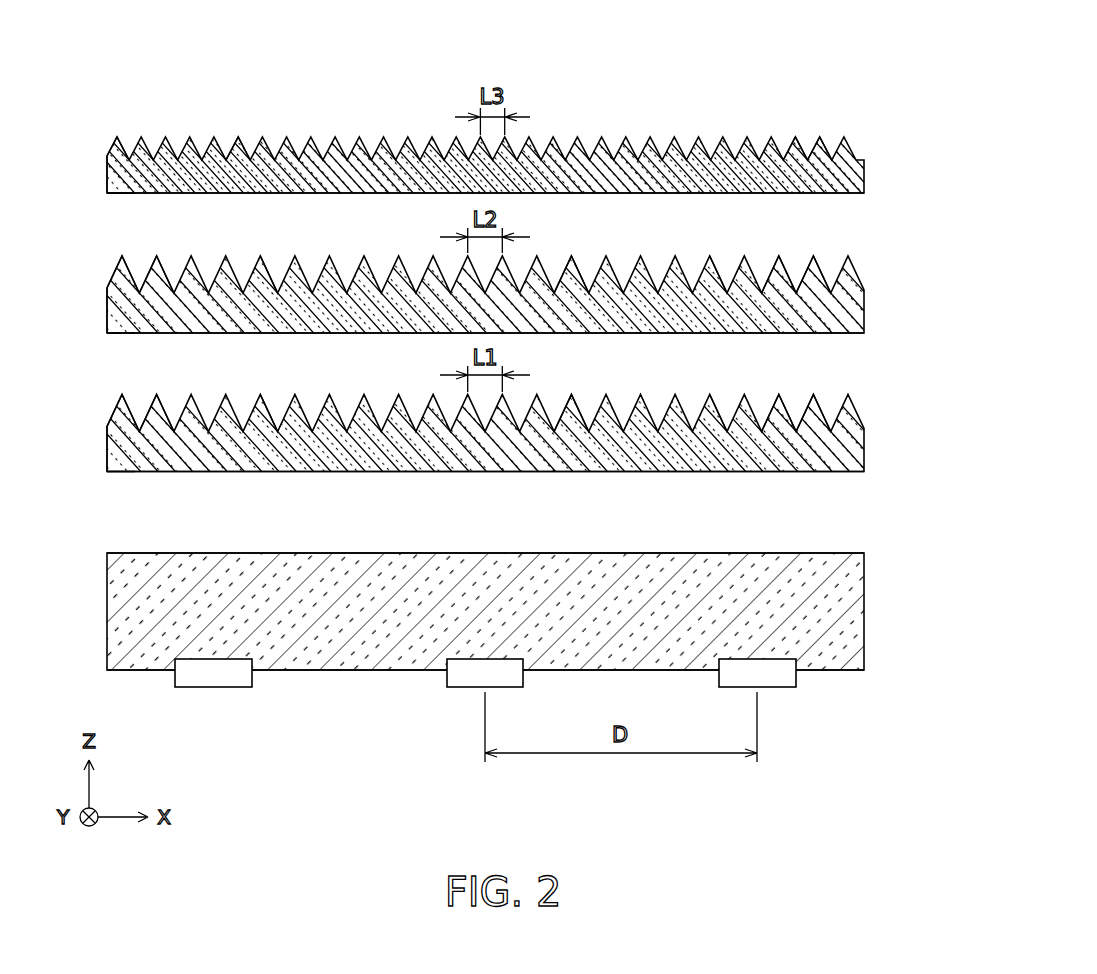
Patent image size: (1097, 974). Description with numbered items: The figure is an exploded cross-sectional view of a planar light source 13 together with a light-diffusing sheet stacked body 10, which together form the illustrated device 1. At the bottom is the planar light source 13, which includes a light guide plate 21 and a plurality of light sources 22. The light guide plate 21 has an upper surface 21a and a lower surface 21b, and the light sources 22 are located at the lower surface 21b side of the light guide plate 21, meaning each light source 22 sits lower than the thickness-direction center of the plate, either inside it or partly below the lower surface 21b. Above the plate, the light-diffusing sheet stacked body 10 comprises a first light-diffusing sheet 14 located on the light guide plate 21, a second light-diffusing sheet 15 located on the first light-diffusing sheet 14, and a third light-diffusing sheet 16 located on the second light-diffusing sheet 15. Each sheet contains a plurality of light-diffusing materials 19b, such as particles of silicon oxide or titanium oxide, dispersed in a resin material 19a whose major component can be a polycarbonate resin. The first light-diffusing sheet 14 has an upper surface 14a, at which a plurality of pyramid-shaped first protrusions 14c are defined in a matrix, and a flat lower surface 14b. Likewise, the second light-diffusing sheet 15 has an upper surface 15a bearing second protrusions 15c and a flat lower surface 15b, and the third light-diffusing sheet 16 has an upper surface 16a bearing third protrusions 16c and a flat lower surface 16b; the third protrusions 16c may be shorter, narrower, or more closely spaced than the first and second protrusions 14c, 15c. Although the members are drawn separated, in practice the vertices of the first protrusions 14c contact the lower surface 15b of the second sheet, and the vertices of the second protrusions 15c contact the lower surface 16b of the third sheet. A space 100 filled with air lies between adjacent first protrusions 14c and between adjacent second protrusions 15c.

The light emitting device 1 is at (874, 46).
The light-diffusing sheet stacked body 10 is at (921, 155).
The planar light source 13 is at (920, 553).
The first light-diffusing sheet 14 is at (864, 446).
The upper surface 14a is at (821, 406).
The lower surface 14b is at (435, 472).
The first protrusions 14c is at (128, 422).
The second light-diffusing sheet 15 is at (864, 307).
The upper surface 15a is at (821, 267).
The lower surface 15b is at (435, 333).
The second protrusions 15c is at (128, 283).
The third light-diffusing sheet 16 is at (864, 172).
The upper surface 16a is at (800, 140).
The lower surface 16b is at (435, 193).
The third protrusions 16c is at (122, 153).
The resin material 19a is at (107, 170).
The light-diffusing materials 19b is at (128, 193).
The light guide plate 21 is at (864, 607).
The upper surface 21a is at (330, 553).
The lower surface 21b is at (348, 670).
The light sources 22 is at (211, 672).
The space 100 is at (278, 273).